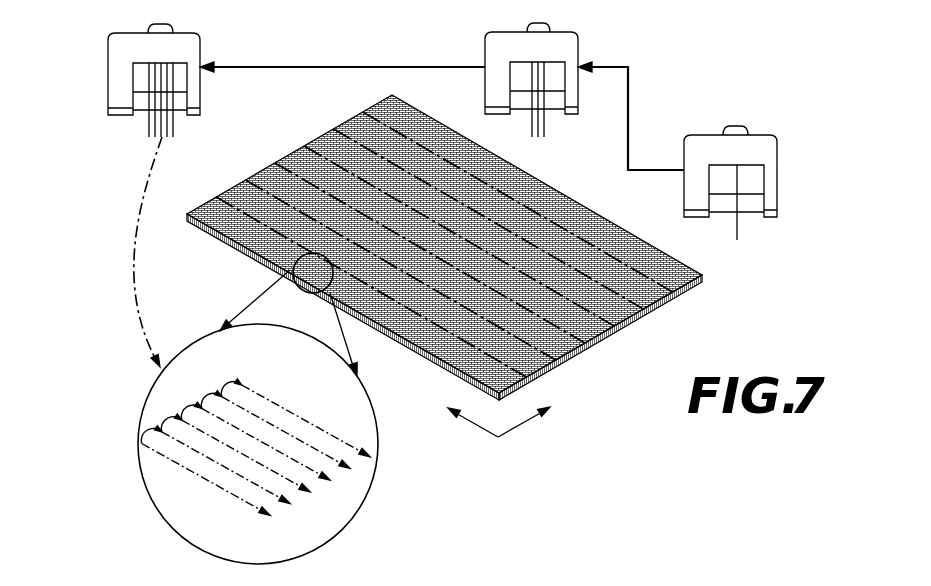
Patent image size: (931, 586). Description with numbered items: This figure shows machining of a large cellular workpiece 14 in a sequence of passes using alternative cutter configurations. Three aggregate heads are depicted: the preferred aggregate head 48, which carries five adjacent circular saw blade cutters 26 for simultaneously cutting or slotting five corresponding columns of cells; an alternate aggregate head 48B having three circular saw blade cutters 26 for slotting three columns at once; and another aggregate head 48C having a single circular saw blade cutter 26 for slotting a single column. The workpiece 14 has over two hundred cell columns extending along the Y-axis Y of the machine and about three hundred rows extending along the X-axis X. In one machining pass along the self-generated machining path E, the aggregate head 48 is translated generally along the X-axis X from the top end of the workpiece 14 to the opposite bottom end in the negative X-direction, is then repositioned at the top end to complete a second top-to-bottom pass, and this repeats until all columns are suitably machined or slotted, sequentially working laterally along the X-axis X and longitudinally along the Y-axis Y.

The cellular workpiece 14 is at (602, 343).
The circular saw blade cutter 26 is at (147, 128).
The aggregate head 48 is at (108, 52).
The aggregate head 48B is at (485, 45).
The aggregate head 48C is at (757, 135).
The self-generated machining path E is at (212, 482).
The X-axis X is at (472, 423).
The Y-axis Y is at (527, 425).